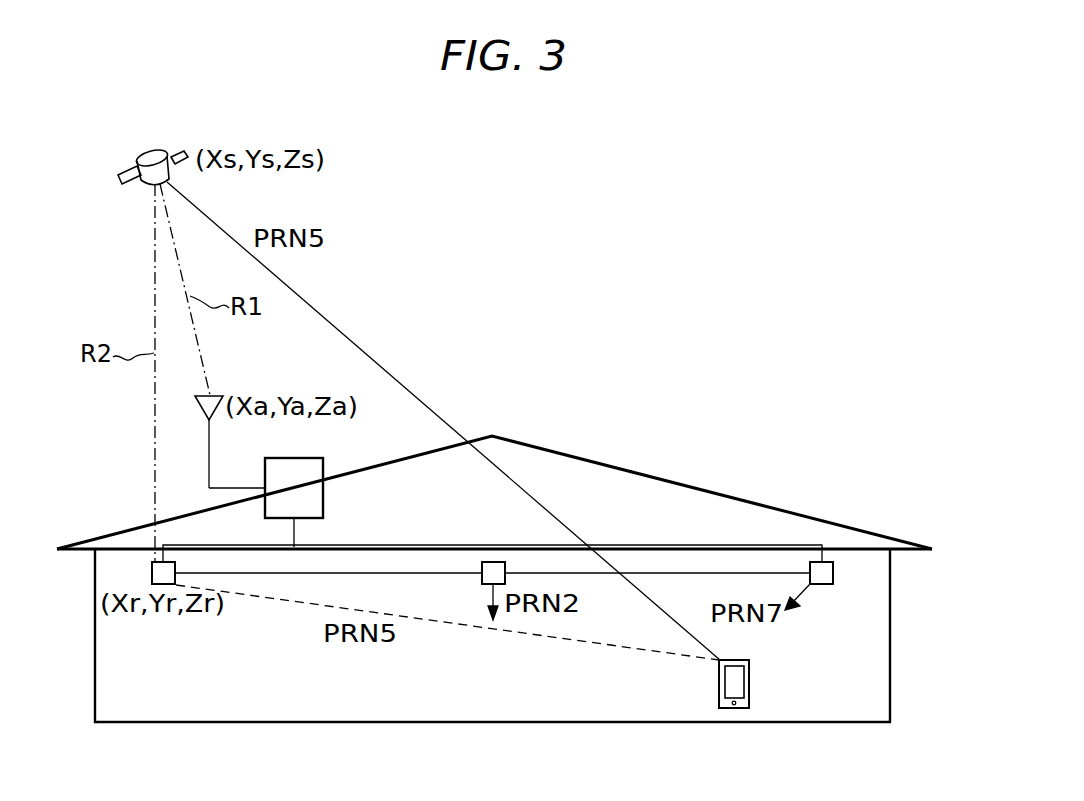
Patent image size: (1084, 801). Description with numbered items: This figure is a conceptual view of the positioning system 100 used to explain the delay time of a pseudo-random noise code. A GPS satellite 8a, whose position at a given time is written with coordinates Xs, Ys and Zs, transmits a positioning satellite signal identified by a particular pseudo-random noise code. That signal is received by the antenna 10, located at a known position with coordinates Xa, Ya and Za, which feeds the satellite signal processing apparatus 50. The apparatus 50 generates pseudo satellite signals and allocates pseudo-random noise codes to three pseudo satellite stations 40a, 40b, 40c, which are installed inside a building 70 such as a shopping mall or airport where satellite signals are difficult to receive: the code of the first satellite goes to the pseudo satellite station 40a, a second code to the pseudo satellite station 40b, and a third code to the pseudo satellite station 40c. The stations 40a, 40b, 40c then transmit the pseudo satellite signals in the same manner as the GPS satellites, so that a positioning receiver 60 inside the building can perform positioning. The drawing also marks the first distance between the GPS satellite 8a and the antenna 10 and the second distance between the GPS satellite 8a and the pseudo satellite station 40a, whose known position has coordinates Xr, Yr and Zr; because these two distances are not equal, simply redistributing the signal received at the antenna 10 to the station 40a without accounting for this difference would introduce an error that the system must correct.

The positioning system 100 is at (960, 121).
The GPS satellite 8a is at (149, 151).
The antenna 10 is at (213, 395).
The satellite signal processing apparatus 50 is at (323, 495).
The building 70 is at (742, 492).
The pseudo satellite station 40a is at (152, 575).
The pseudo satellite station 40b is at (492, 561).
The pseudo satellite station 40c is at (829, 579).
The positioning receiver 60 is at (749, 676).